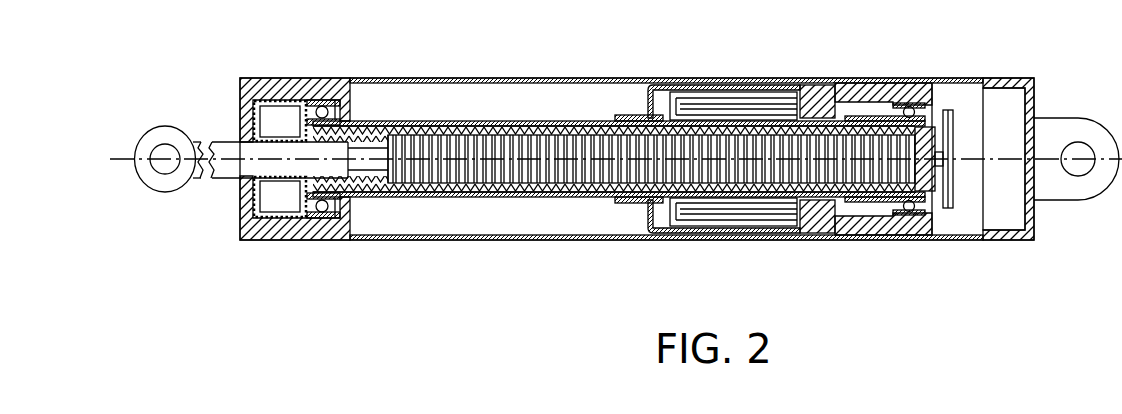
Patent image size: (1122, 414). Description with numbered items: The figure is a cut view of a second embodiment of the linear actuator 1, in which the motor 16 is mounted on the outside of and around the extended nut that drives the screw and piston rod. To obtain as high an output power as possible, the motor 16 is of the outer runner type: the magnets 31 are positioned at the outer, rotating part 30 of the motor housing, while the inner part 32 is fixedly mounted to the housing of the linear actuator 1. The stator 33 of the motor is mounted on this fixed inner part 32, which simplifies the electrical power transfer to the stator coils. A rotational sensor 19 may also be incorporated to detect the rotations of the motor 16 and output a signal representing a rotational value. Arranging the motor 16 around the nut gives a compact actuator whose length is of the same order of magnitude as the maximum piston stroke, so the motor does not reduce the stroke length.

The linear actuator 1 is at (616, 150).
The motor 16 is at (679, 184).
The rotational sensor 19 is at (951, 200).
The outer rotating part 30 is at (653, 234).
The magnets 31 is at (711, 222).
The inner part 32 is at (817, 223).
The stator 33 is at (763, 210).